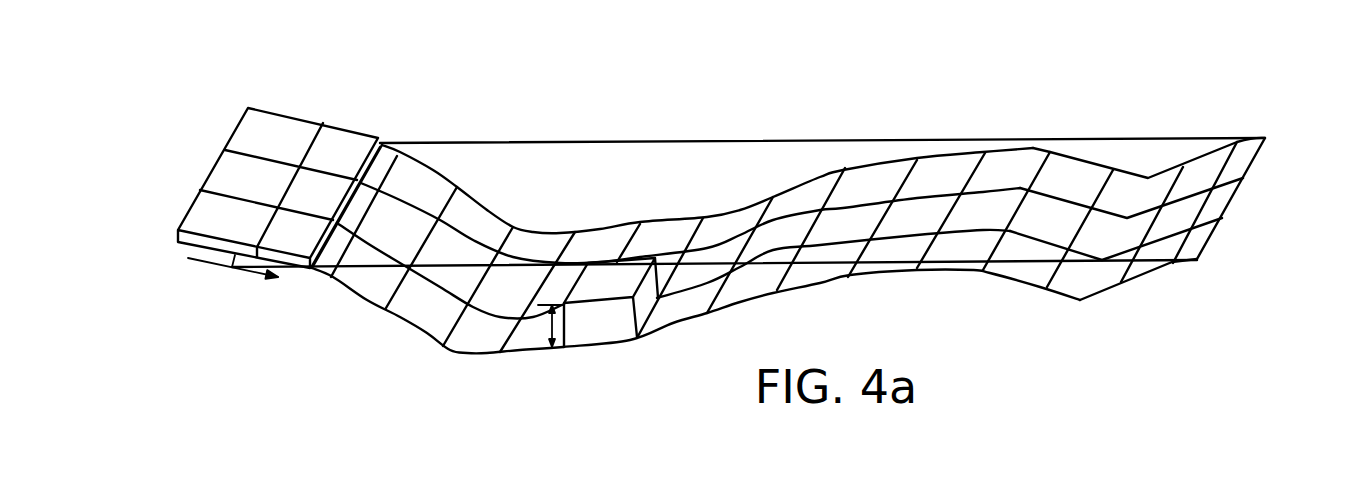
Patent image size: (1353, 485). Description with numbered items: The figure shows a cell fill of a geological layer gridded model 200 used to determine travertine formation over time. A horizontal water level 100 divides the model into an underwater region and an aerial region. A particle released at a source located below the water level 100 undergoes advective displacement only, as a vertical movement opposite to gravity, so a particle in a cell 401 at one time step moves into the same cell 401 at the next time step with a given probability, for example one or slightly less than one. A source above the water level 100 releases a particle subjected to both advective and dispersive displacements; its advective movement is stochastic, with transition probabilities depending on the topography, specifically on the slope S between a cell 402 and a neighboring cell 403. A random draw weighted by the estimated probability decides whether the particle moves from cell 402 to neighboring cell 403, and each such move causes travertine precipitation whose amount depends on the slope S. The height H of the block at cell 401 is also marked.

The water level 100 is at (777, 137).
The geological layer gridded model 200 is at (1107, 293).
The cell 401 is at (605, 337).
The cell 402 is at (178, 245).
The neighboring cell 403 is at (292, 270).
The slope S is at (233, 278).
The height of block H is at (548, 325).